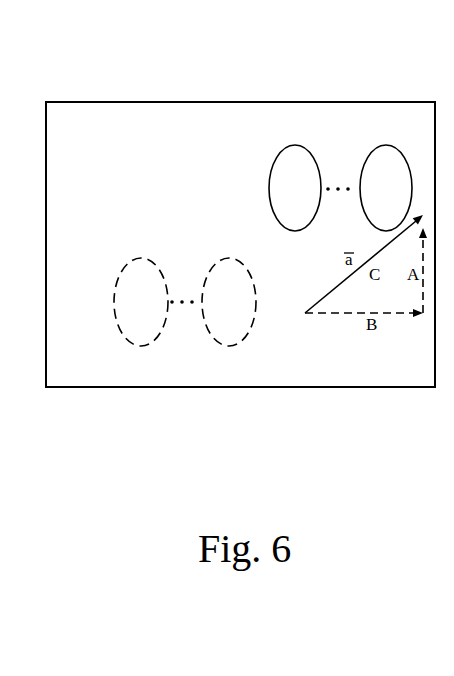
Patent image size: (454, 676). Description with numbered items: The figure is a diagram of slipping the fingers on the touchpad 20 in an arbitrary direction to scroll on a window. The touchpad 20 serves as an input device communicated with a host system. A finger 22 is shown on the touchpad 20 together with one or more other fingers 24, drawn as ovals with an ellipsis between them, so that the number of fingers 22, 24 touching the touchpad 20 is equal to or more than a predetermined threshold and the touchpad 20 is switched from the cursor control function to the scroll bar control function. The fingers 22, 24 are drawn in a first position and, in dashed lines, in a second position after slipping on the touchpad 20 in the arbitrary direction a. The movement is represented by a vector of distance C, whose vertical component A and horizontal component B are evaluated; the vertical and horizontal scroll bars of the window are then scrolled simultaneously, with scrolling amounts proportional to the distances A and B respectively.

The touchpad 20 is at (242, 102).
The finger 22 is at (269, 190).
The other fingers 24 is at (364, 166).